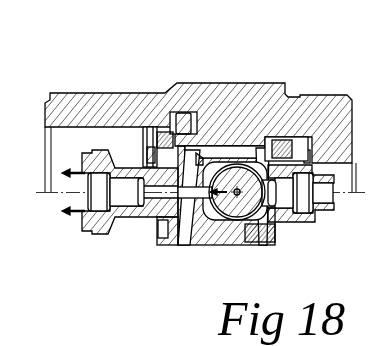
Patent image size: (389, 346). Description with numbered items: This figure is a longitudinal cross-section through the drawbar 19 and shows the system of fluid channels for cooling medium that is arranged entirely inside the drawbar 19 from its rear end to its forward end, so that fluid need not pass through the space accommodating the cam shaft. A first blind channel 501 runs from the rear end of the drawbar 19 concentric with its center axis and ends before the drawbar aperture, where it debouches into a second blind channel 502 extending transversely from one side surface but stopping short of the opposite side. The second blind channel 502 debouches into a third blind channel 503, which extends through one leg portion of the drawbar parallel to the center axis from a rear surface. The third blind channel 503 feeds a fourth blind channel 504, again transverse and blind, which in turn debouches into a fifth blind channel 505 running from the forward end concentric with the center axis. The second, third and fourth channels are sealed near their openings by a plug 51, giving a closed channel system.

The drawbar 19 is at (175, 138).
The third blind channel 503 is at (225, 150).
The plug 51 is at (282, 152).
The fifth blind channel 505 is at (155, 193).
The fourth blind channel 504 is at (196, 210).
The second blind channel 502 is at (273, 208).
The first blind channel 501 is at (323, 188).